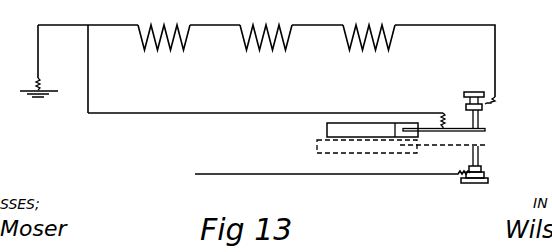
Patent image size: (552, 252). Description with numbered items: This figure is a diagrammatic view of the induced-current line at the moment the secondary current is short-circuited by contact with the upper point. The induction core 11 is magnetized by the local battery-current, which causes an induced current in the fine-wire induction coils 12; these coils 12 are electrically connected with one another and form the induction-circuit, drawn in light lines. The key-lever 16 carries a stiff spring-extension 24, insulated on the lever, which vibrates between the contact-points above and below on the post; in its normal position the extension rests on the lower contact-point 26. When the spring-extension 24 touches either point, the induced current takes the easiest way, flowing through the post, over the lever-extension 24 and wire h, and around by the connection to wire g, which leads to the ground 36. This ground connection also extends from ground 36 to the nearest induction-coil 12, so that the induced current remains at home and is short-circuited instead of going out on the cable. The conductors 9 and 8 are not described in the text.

The conductor 9 is at (34, 36).
The fine-wire coils 12 is at (266, 36).
The ground 36 is at (39, 96).
The core 11 is at (266, 112).
The key-lever 16 is at (327, 130).
The spring-extension 24 is at (472, 133).
The lower contact-point 26 is at (481, 113).
The conductor 8 is at (332, 183).